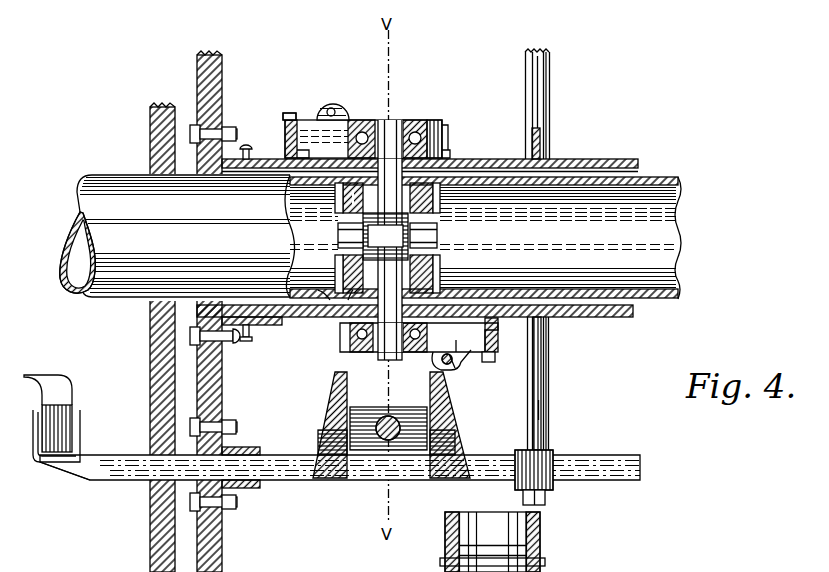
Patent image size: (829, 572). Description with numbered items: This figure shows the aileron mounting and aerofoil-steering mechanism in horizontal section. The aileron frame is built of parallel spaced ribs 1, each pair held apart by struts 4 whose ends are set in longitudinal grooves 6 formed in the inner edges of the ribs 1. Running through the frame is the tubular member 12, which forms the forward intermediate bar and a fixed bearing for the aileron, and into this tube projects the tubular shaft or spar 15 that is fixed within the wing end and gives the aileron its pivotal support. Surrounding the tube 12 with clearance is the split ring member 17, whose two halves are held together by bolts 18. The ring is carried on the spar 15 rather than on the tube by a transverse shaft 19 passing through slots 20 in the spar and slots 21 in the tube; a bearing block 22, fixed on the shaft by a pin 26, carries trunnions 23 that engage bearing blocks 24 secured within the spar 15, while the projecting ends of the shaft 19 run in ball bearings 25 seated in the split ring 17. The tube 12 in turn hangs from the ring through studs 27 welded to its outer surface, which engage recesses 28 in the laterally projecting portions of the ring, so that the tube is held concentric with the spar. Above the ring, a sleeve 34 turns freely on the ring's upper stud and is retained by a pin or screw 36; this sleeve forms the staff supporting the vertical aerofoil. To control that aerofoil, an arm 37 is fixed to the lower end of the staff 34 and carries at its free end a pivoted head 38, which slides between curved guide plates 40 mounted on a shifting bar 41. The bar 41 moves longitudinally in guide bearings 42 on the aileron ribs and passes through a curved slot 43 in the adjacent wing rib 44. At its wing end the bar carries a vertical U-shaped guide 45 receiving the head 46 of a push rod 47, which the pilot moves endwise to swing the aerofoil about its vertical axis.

The ribs 1 is at (549, 385).
The struts 4 is at (541, 336).
The longitudinal grooves 6 is at (548, 409).
The tubular member 12 is at (620, 159).
The tubular shaft or spar 15 is at (676, 200).
The split ring member 17 is at (448, 150).
The bolts 18 is at (333, 110).
The transverse shaft 19 is at (395, 138).
The slots 20 is at (333, 304).
The slots 21 is at (351, 305).
The bearing block 22 is at (440, 258).
The trunnions 23 is at (338, 237).
The bearing blocks 24 is at (340, 258).
The ball bearings 25 is at (408, 131).
The pin 26 is at (385, 236).
The studs 27 is at (284, 150).
The recesses 28 is at (277, 129).
The sleeve 34 is at (541, 528).
The pin or screw 36 is at (546, 560).
The arm 37 is at (394, 441).
The head 38 is at (372, 445).
The guide plates 40 is at (338, 394).
The shifting bar 41 is at (297, 480).
The guide bearings 42 is at (252, 447).
The curved slot 43 is at (153, 483).
The rib 44 is at (152, 550).
The U-shaped guide 45 is at (80, 436).
The head 46 is at (68, 414).
The push rod 47 is at (39, 381).